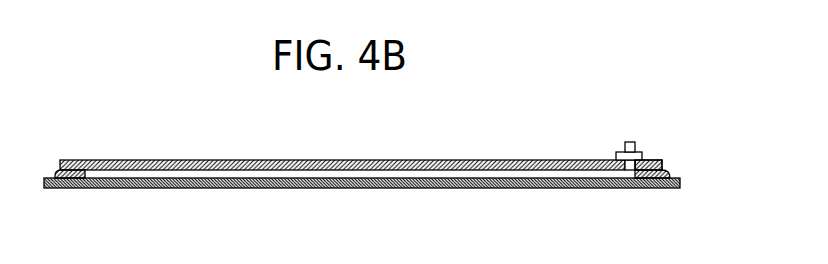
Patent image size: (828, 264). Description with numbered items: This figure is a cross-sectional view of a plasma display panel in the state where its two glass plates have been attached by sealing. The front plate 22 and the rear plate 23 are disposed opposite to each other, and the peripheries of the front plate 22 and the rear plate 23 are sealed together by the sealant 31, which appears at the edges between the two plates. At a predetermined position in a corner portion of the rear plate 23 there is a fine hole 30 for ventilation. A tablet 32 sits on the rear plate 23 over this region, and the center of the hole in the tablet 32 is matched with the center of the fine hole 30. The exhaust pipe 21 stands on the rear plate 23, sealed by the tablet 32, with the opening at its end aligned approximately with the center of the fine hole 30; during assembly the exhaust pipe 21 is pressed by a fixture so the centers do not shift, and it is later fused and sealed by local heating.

The exhaust pipe 21 is at (628, 146).
The front plate 22 is at (444, 183).
The rear plate 23 is at (408, 166).
The fine hole for ventilation 30 is at (620, 155).
The sealant 31 is at (665, 172).
The tablet 32 is at (645, 155).